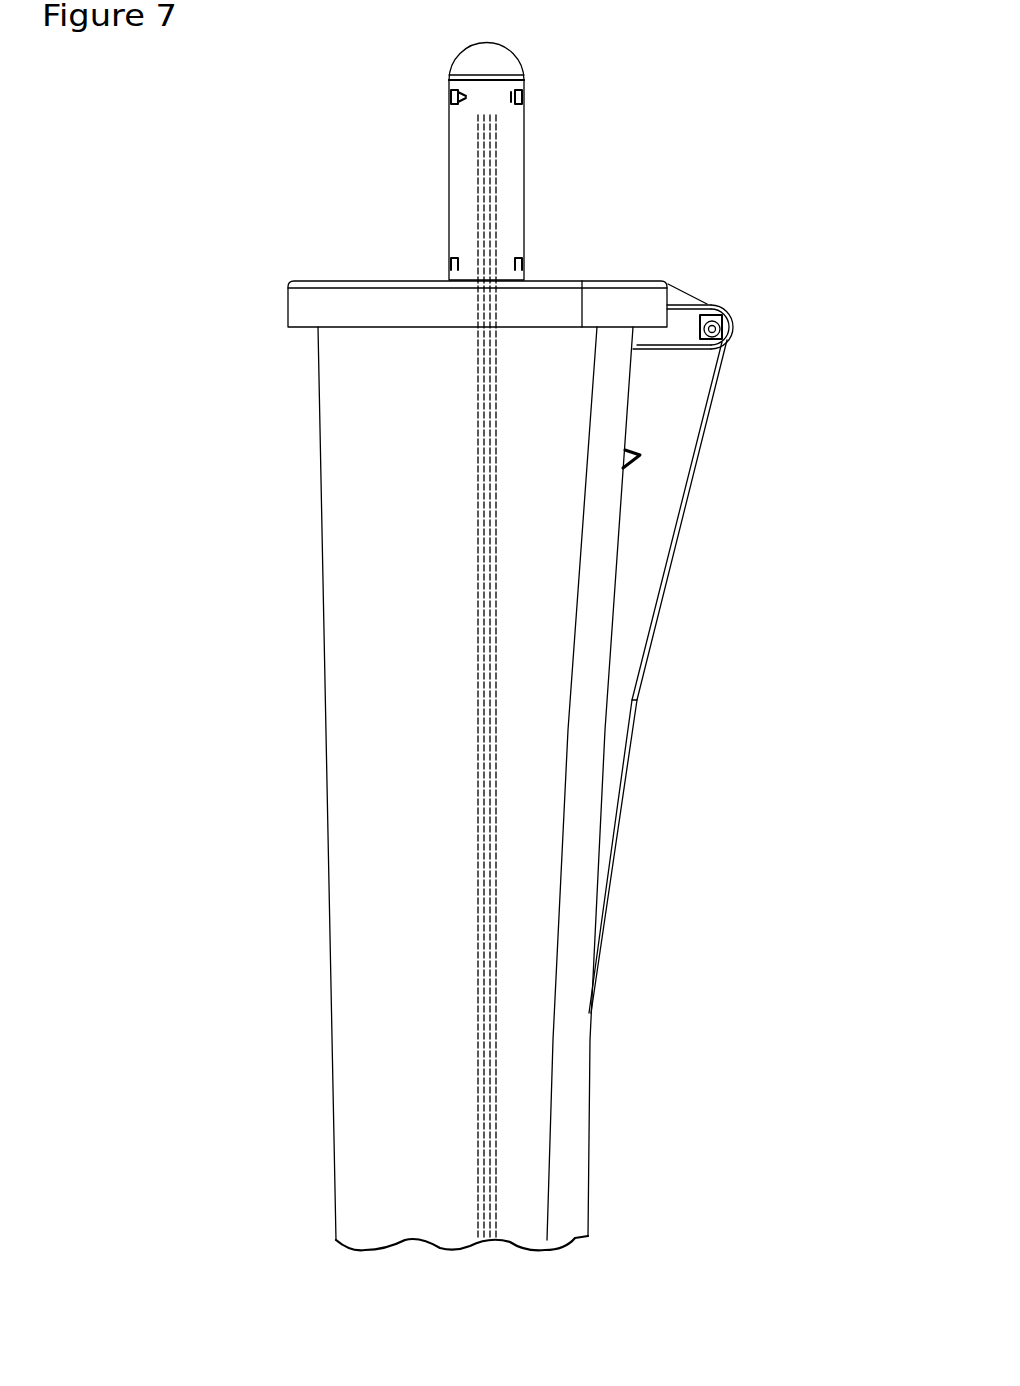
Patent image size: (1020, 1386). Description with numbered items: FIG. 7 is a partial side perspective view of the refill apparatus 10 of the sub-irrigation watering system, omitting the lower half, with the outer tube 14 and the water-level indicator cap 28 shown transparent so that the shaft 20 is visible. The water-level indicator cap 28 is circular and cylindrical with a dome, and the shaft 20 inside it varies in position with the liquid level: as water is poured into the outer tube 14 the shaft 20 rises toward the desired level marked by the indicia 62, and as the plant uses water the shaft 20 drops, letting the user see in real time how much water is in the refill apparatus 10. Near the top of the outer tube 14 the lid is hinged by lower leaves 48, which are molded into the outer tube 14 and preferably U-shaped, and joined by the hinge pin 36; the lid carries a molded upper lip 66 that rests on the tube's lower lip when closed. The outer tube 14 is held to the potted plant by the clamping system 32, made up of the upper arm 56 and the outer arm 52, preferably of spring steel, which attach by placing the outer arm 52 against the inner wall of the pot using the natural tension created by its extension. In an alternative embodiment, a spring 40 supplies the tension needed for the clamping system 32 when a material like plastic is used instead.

The refill apparatus 10 is at (523, 644).
The outer tube 14 is at (332, 1046).
The shaft 20 is at (478, 155).
The water-level indicator cap 28 is at (449, 213).
The clamping system 32 is at (670, 580).
The hinge pin 36 is at (720, 331).
The spring 40 is at (737, 312).
The lower leaves 48 is at (692, 350).
The outer arm 52 is at (716, 418).
The upper arm 56 is at (705, 304).
The indicia 62 is at (448, 80).
The upper lip 66 is at (288, 292).